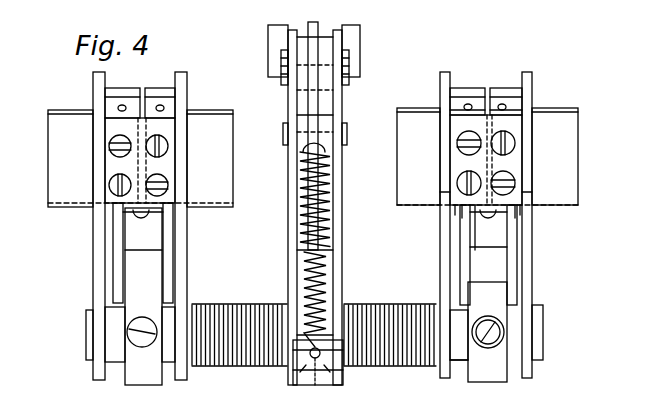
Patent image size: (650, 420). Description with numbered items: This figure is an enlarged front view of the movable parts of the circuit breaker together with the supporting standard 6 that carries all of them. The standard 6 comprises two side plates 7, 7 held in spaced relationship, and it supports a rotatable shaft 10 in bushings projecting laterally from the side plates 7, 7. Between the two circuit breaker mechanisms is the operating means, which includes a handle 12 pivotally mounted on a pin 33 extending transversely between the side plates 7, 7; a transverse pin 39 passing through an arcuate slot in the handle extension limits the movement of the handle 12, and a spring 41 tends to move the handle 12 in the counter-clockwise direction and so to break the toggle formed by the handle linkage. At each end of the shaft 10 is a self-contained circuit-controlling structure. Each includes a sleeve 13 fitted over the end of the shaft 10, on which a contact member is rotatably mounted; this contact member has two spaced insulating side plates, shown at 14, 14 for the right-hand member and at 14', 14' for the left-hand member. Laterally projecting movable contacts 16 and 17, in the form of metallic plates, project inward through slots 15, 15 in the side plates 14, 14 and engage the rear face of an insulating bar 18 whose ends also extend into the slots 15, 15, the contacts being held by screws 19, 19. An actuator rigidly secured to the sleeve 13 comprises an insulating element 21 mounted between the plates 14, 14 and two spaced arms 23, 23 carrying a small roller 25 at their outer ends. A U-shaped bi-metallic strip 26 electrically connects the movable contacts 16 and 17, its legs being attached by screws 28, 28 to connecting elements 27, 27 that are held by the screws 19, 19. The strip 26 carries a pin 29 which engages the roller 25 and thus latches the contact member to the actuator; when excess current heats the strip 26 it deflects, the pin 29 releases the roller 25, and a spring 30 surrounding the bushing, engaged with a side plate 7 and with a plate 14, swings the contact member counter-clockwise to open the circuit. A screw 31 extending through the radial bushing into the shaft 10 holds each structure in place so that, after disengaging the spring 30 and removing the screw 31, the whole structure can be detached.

The standard 6 is at (343, 193).
The side plates 7 is at (289, 241).
The rotatable shaft 10 is at (543, 330).
The handle 12 is at (318, 178).
The sleeve 13 is at (466, 384).
The side plates of contact member 14 is at (487, 225).
The side plates of contact member 14' is at (137, 226).
The slots 15 is at (440, 192).
The movable contact 16 is at (400, 124).
The movable contact 17 is at (572, 129).
The insulating bar 18 is at (522, 125).
The screws 19 is at (458, 183).
The insulating element 21 is at (487, 332).
The arms 23 is at (463, 240).
The roller 25 is at (500, 213).
The bi-metallic strip 26 is at (470, 90).
The connecting elements 27 is at (462, 112).
The screws 28 is at (466, 103).
The pin 29 is at (480, 212).
The spring 30 is at (243, 370).
The screw 31 is at (490, 346).
The pin 33 is at (322, 78).
The transverse pin 39 is at (288, 145).
The spring 41 is at (325, 291).